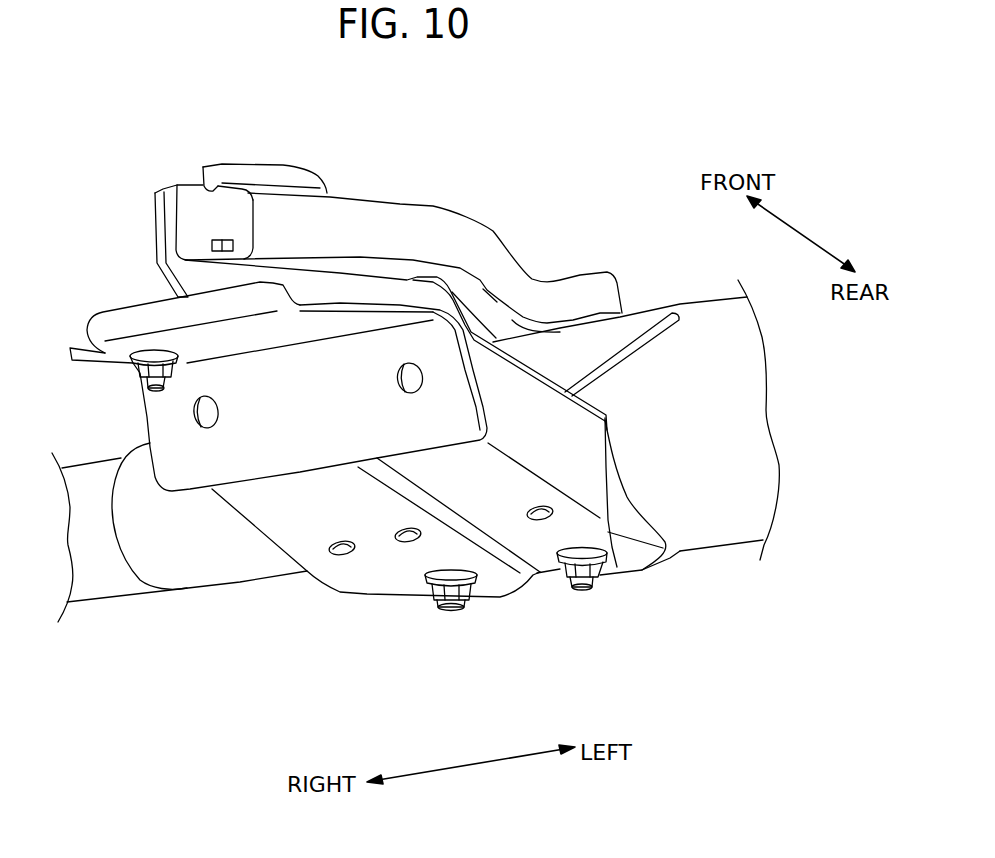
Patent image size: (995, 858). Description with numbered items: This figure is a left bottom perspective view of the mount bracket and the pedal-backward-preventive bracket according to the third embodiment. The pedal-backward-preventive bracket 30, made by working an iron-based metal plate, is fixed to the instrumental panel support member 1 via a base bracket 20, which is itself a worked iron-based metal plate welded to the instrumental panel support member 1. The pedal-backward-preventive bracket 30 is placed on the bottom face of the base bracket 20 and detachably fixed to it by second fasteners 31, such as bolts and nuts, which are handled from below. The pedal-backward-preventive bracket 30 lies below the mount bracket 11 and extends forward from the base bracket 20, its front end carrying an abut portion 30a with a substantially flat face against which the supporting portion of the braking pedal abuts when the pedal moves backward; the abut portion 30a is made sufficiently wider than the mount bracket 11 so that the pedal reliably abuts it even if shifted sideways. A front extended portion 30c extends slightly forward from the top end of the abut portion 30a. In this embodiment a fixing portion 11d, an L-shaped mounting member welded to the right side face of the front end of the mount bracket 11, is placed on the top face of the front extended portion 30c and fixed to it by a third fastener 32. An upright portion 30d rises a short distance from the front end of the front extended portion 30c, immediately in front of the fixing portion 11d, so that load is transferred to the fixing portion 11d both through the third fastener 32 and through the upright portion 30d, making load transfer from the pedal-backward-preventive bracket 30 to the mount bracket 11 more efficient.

The instrumental panel support member 1 is at (695, 312).
The mount bracket 11 is at (495, 226).
The fixing portion 11d is at (187, 276).
The base bracket 20 is at (642, 570).
The pedal-backward-preventive bracket 30 is at (366, 571).
The abut portion 30a is at (281, 443).
The front extended portion 30c is at (365, 303).
The upright portion 30d is at (120, 318).
The second fasteners 31 is at (443, 609).
The third fastener 32 is at (140, 368).